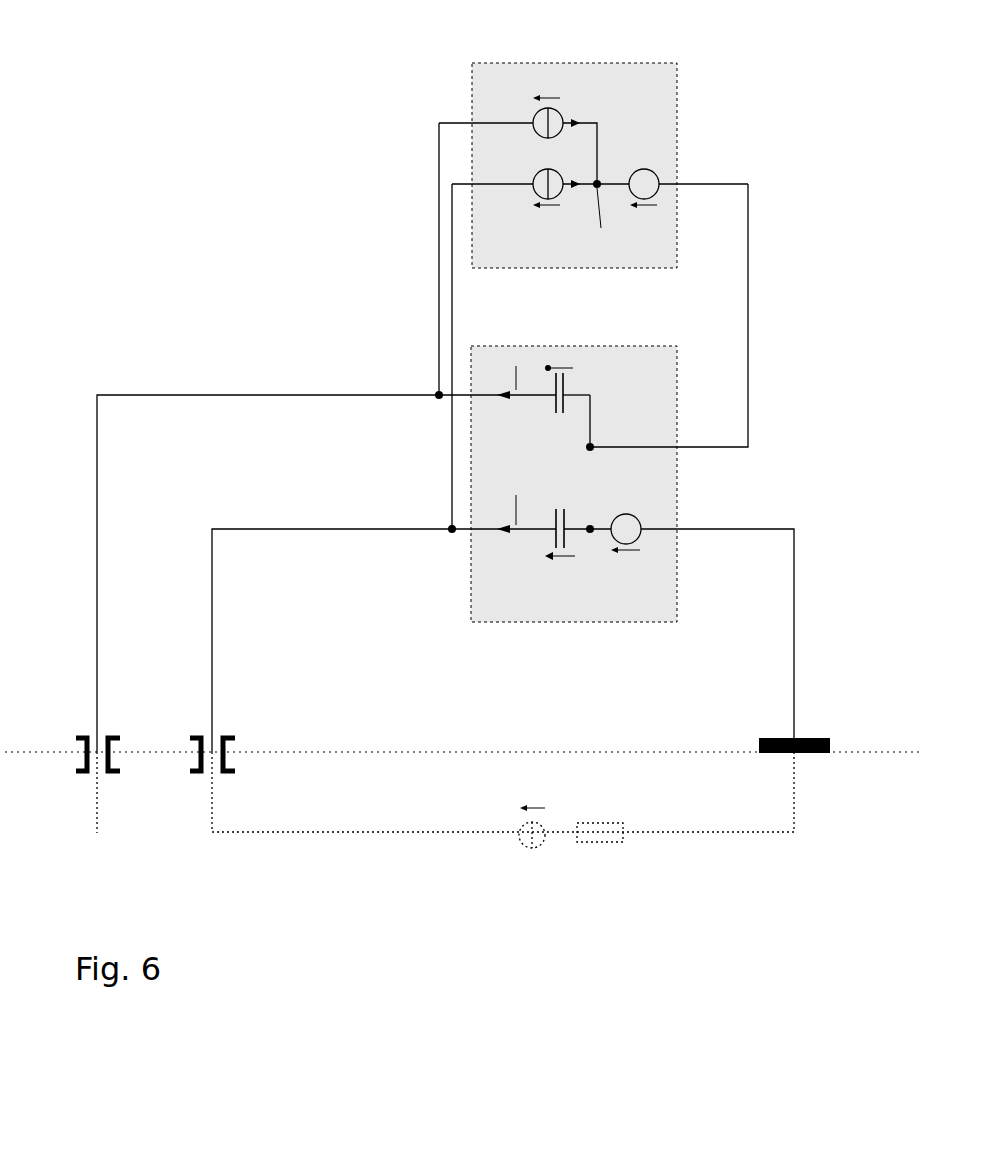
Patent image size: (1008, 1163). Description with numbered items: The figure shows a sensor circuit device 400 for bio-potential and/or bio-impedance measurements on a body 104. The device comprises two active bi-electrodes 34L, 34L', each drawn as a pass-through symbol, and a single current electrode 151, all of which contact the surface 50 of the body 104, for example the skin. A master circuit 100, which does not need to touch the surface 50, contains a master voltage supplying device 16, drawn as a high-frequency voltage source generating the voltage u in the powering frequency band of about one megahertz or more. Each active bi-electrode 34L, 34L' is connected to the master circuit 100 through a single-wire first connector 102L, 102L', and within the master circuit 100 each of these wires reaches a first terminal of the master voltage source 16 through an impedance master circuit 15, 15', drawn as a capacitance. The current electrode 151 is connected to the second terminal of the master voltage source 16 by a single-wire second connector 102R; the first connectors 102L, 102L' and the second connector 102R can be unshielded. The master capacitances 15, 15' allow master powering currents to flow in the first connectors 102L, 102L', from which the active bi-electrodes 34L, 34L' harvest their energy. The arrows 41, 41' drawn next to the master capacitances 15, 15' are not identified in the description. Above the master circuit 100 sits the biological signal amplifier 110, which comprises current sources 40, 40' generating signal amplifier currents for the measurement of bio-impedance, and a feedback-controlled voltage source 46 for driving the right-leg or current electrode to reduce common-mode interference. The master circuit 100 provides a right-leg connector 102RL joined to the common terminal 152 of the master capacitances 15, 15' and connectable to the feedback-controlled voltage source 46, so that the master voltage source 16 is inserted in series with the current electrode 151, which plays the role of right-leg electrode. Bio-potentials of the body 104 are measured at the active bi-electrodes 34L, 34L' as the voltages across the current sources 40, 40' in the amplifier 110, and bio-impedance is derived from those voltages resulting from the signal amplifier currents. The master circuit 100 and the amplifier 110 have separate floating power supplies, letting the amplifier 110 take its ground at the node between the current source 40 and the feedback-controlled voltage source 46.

The sensor circuit device 400 is at (130, 157).
The biological signal amplifier 110 is at (649, 62).
The current source 40 is at (518, 127).
The current source 40' is at (540, 212).
The feedback-controlled voltage source 46 is at (655, 169).
The master circuit 100 is at (660, 346).
The right-leg connector 102RL is at (749, 315).
The common terminal 152 is at (591, 446).
The impedance master circuit 15' is at (570, 348).
The current arrow 41' is at (567, 327).
The single-wire first connector 102L' is at (326, 478).
The single-wire first connector 102L is at (472, 508).
The single-wire second connector 102R is at (712, 528).
The impedance master circuit 15 is at (491, 530).
The current arrow 41 is at (525, 617).
The master voltage supplying device 16 is at (639, 541).
The surface 50 is at (345, 750).
The active bi-electrode 34L' is at (121, 715).
The active bi-electrode 34L is at (238, 715).
The current electrode 151 is at (810, 736).
The body 104 is at (678, 832).